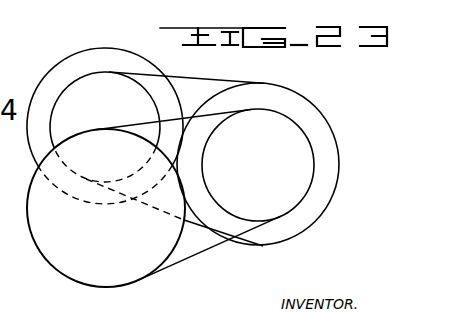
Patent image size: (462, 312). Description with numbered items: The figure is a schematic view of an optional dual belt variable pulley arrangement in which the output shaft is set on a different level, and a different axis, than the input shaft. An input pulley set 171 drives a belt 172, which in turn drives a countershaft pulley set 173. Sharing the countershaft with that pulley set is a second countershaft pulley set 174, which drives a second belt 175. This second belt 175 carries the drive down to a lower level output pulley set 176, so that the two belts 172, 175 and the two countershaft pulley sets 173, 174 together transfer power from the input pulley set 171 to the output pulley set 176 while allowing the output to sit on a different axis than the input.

The input pulley set 171 is at (71, 60).
The belt 172 is at (200, 80).
The countershaft pulley set 173 is at (310, 102).
The second countershaft pulley set 174 is at (313, 147).
The belt 175 is at (204, 250).
The output pulley set 176 is at (80, 269).